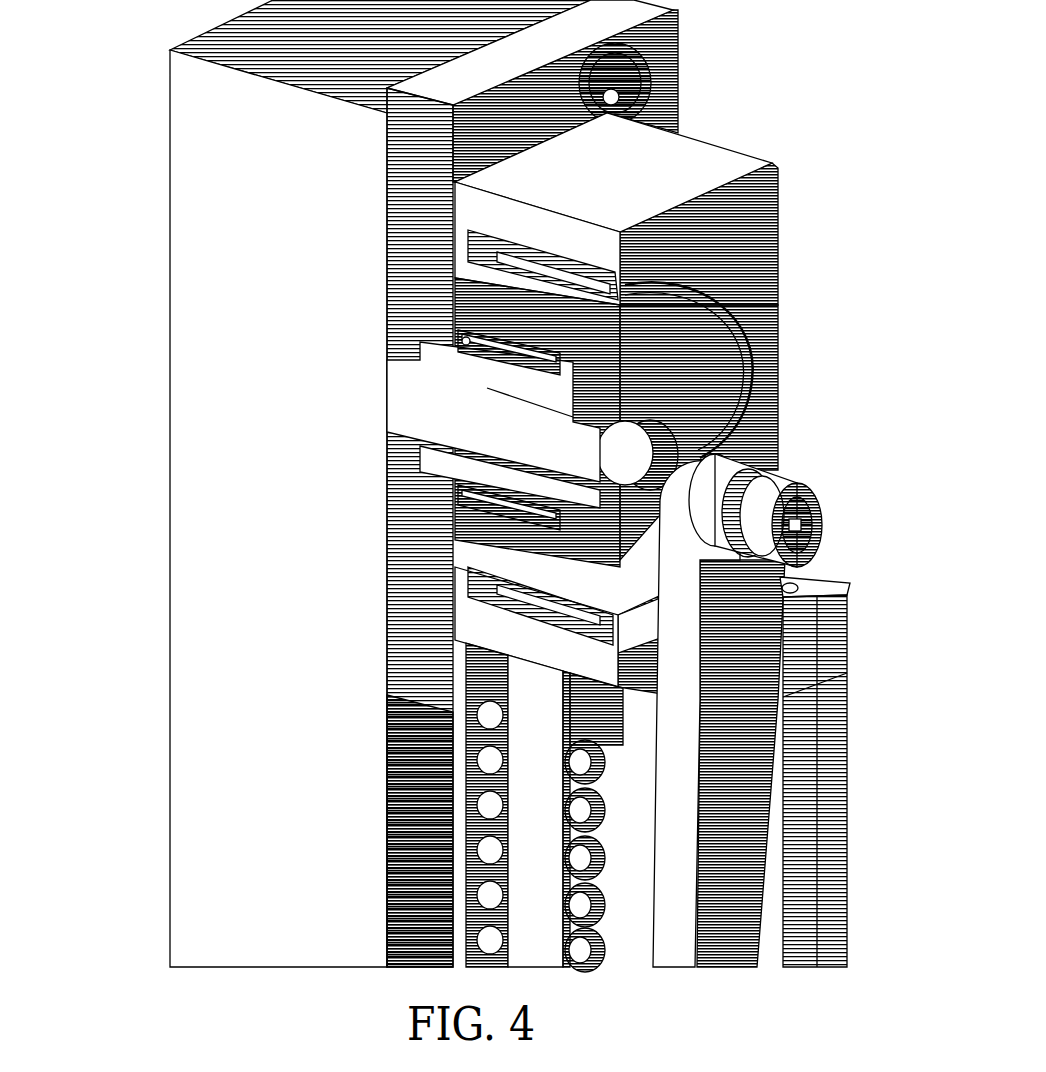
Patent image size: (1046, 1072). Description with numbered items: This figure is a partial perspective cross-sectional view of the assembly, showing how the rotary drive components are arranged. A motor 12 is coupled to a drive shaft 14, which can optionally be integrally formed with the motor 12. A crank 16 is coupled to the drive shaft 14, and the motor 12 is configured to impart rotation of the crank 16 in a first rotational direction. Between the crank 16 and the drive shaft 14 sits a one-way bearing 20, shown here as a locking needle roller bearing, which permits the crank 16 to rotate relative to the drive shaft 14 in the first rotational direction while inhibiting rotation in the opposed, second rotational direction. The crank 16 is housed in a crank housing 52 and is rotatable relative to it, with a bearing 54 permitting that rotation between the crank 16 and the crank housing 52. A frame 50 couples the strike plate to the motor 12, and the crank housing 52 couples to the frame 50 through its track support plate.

The motor 12 is at (248, 924).
The drive shaft 14 is at (550, 443).
The crank 16 is at (706, 396).
The one-way bearing 20 is at (420, 341).
The frame 50 is at (835, 725).
The crank housing 52 is at (723, 172).
The bearing 54 is at (640, 292).